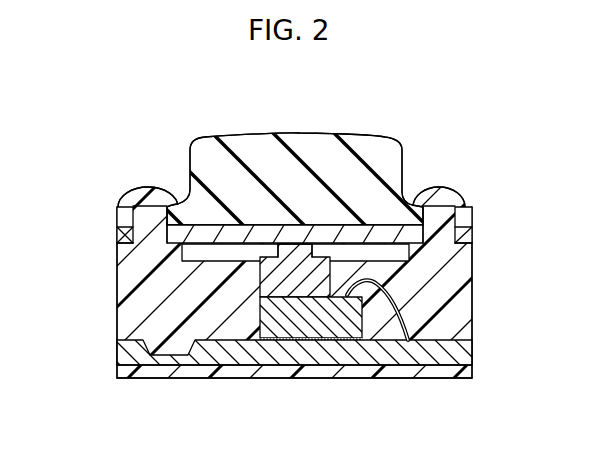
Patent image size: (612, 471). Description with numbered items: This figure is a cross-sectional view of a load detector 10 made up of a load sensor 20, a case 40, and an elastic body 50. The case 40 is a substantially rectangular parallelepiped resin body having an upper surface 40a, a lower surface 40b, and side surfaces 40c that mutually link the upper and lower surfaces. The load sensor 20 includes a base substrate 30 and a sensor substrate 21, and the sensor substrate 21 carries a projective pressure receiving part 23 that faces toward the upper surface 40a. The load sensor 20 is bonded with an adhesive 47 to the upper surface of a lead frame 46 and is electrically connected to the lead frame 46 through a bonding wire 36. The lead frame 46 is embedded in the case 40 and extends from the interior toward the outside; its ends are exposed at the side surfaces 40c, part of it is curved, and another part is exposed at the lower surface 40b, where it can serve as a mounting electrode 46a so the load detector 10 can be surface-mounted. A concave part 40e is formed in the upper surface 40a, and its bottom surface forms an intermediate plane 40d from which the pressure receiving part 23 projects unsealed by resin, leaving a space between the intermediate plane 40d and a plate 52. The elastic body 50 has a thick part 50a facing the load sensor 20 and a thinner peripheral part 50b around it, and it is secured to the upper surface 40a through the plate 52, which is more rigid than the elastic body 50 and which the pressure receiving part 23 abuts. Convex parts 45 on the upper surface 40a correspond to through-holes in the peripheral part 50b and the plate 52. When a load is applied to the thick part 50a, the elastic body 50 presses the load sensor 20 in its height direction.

The load detector 10 is at (130, 106).
The load sensor 20 is at (302, 346).
The sensor substrate 21 is at (302, 283).
The pressure receiving part 23 is at (295, 248).
The base substrate 30 is at (238, 411).
The bonding wire 36 is at (385, 291).
The case 40 is at (130, 313).
The upper surface 40a is at (118, 234).
The lower surface 40b is at (135, 381).
The side surface 40c is at (118, 291).
The intermediate plane 40d is at (383, 251).
The concave part 40e is at (200, 233).
The convex part 45 is at (143, 196).
The lead frame 46 is at (125, 351).
The mounting electrode 46a is at (163, 380).
The adhesive 47 is at (360, 340).
The elastic body 50 is at (300, 168).
The thick part 50a is at (257, 145).
The peripheral part 50b is at (118, 214).
The plate 52 is at (209, 238).